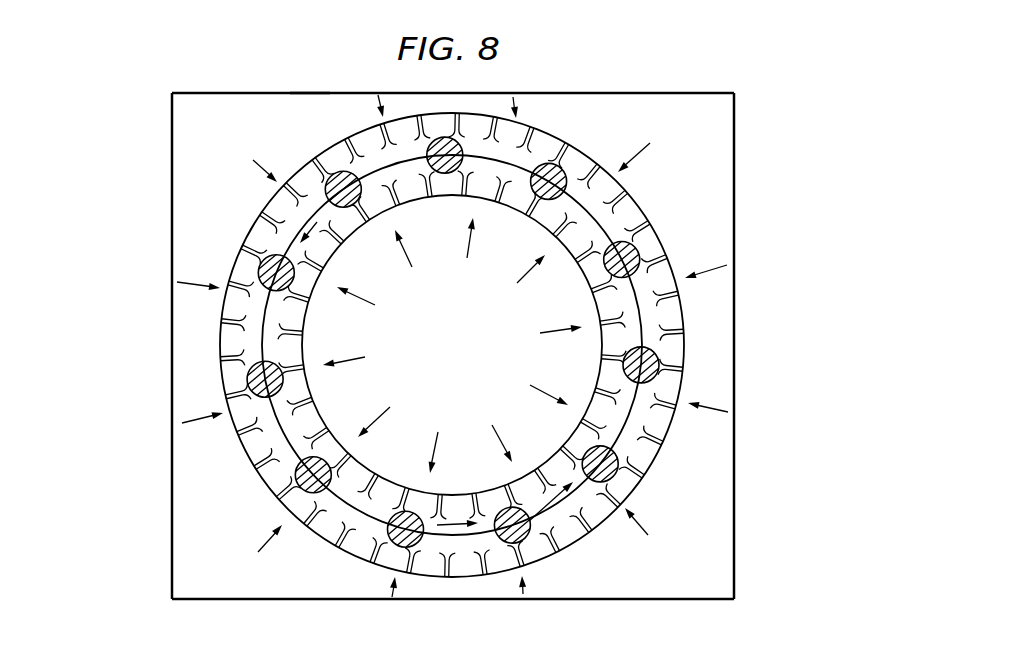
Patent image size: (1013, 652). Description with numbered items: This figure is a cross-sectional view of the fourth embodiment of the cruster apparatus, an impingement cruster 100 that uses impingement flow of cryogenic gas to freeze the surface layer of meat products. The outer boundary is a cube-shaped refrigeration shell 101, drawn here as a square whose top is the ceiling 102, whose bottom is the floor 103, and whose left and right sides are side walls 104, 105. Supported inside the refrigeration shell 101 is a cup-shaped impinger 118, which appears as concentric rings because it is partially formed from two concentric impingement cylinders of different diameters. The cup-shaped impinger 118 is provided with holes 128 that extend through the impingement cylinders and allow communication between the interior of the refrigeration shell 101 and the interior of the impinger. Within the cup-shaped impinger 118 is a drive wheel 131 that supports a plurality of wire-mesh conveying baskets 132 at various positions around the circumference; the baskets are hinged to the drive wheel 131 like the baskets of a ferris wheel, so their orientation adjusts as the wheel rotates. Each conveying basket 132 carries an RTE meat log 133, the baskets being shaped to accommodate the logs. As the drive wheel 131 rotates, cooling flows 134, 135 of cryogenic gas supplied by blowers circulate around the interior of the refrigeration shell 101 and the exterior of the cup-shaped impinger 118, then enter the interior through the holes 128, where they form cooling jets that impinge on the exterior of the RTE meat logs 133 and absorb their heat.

The impingement cruster 100 is at (117, 65).
The refrigeration shell 101 is at (258, 93).
The ceiling 102 is at (308, 92).
The floor 103 is at (256, 600).
The side wall 104 is at (172, 442).
The side wall 105 is at (735, 563).
The cup-shaped impinger 118 is at (258, 218).
The holes 128 is at (273, 230).
The drive wheel 131 is at (267, 438).
The conveying baskets 132 is at (426, 545).
The RTE meat logs 133 is at (463, 523).
The cooling flow 134 is at (647, 166).
The cooling flow 135 is at (553, 356).